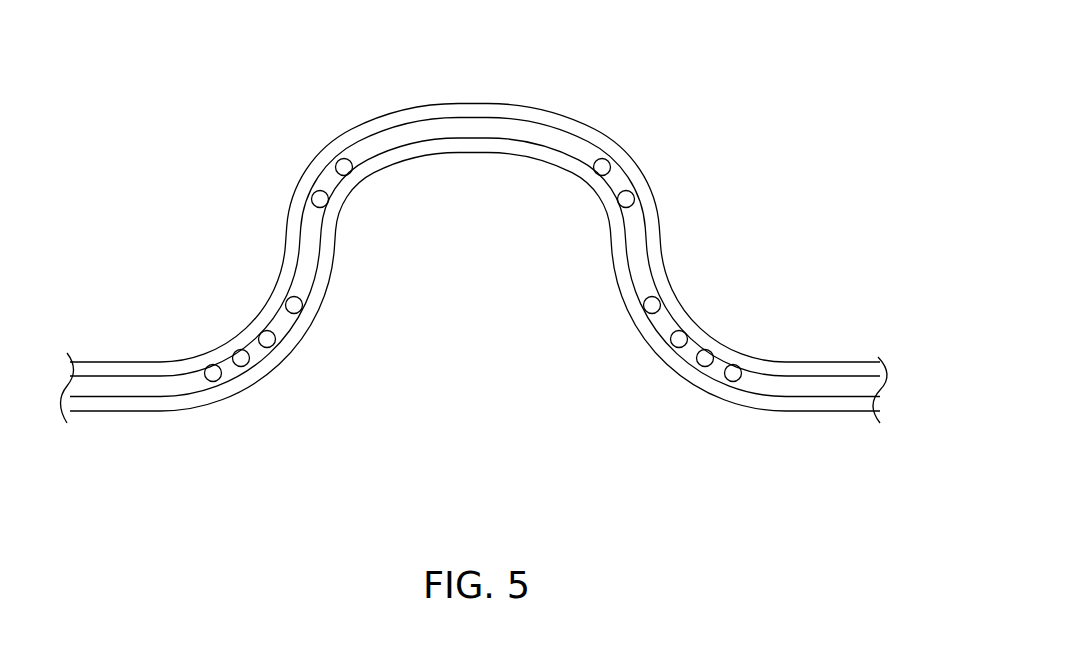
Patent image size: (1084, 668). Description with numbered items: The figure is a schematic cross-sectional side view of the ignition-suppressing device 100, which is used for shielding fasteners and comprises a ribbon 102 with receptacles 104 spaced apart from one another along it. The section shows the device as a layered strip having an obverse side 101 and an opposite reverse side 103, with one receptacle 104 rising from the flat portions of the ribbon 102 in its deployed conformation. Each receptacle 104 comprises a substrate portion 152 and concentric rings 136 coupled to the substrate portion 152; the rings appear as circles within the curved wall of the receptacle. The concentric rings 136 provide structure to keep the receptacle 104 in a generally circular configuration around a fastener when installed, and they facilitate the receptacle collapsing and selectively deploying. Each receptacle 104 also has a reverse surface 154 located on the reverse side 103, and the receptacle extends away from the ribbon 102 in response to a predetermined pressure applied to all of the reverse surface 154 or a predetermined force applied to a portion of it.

The ignition-suppressing device 100 is at (884, 85).
The obverse side 101 is at (838, 355).
The ribbon 102 is at (847, 150).
The reverse side 103 is at (838, 420).
The receptacle 104 is at (600, 108).
The concentric rings 136 is at (604, 163).
The substrate portion 152 is at (404, 132).
The reverse surface 154 is at (470, 155).